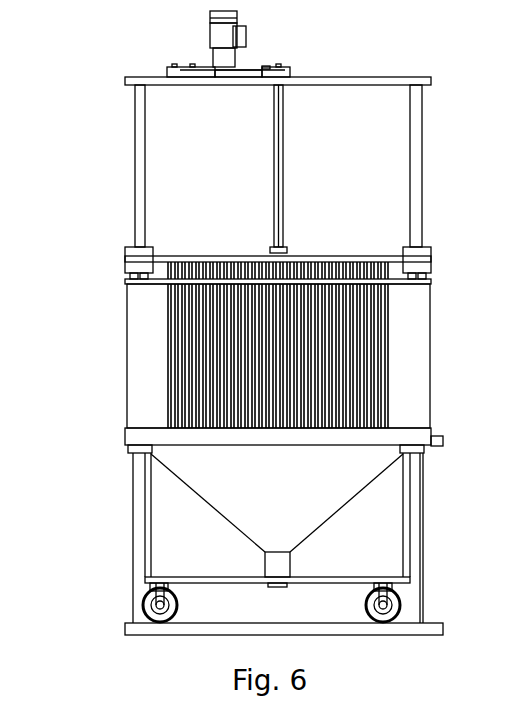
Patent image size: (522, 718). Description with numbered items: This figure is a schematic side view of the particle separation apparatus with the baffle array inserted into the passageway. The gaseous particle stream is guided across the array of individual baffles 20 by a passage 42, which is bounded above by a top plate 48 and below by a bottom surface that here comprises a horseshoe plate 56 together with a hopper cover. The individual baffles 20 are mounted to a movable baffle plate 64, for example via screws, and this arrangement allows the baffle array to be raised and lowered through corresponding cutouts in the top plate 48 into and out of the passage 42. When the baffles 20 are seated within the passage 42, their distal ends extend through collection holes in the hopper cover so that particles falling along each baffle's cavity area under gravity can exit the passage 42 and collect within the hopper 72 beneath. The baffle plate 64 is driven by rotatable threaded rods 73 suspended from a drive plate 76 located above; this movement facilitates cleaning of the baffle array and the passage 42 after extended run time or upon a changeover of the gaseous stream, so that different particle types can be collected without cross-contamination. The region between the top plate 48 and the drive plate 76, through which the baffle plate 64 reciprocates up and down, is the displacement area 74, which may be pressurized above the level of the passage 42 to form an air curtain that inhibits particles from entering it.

The drive plate 76 is at (125, 78).
The displacement area 74 is at (235, 128).
The rotatable threaded rods 73 is at (275, 165).
The baffle plate 64 is at (125, 262).
The top plate 48 is at (125, 284).
The baffles 20 is at (222, 345).
The passage 42 is at (240, 356).
The horseshoe plate 56 is at (143, 438).
The hopper 72 is at (268, 482).